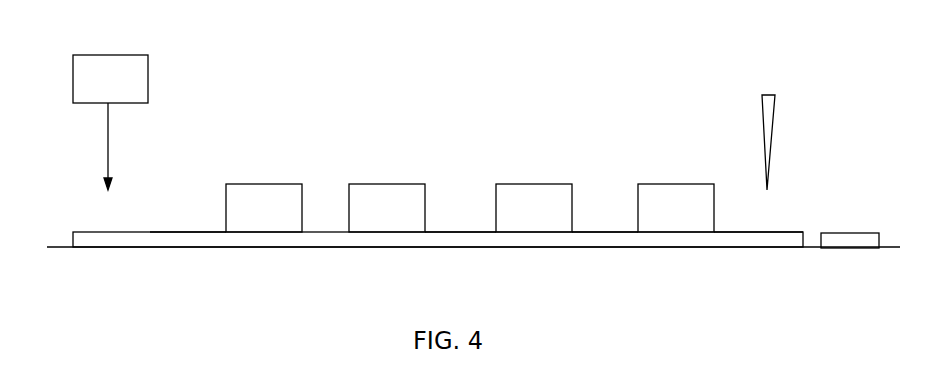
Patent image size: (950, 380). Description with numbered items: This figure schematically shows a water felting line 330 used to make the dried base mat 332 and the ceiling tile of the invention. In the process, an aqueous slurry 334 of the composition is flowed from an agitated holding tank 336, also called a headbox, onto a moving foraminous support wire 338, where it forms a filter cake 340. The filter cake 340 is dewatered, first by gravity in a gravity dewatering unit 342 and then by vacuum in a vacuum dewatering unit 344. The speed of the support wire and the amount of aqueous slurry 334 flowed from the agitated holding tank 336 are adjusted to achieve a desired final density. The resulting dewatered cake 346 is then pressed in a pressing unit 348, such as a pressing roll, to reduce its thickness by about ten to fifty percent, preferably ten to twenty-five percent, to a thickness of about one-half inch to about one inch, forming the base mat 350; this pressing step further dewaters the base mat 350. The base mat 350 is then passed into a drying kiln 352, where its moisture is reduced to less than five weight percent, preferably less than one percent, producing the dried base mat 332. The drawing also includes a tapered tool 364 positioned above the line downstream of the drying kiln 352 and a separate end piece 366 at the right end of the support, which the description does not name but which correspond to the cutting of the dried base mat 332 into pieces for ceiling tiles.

The water felting line 330 is at (319, 104).
The dried base mat 332 is at (753, 232).
The aqueous slurry 334 is at (105, 172).
The agitated holding tank 336 is at (128, 88).
The moving foraminous support wire 338 is at (137, 247).
The filter cake 340 is at (206, 232).
The gravity dewatering unit 342 is at (282, 217).
The vacuum dewatering unit 344 is at (405, 217).
The dewatered cake 346 is at (480, 232).
The pressing unit 348 is at (552, 217).
The base mat 350 is at (617, 232).
The drying kiln 352 is at (694, 217).
The cutting tool 364 is at (776, 103).
The separated substrate piece 366 is at (862, 233).